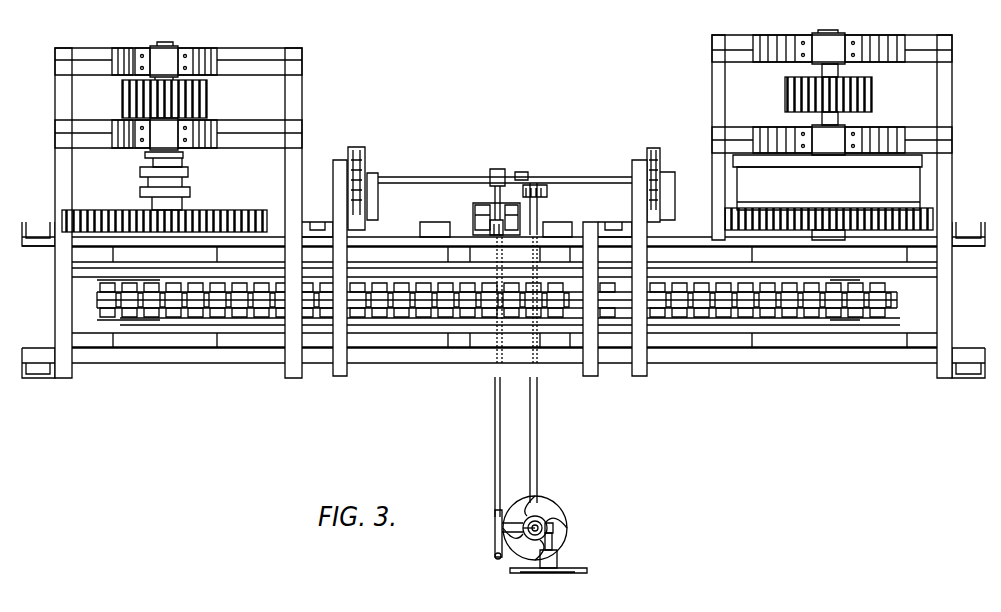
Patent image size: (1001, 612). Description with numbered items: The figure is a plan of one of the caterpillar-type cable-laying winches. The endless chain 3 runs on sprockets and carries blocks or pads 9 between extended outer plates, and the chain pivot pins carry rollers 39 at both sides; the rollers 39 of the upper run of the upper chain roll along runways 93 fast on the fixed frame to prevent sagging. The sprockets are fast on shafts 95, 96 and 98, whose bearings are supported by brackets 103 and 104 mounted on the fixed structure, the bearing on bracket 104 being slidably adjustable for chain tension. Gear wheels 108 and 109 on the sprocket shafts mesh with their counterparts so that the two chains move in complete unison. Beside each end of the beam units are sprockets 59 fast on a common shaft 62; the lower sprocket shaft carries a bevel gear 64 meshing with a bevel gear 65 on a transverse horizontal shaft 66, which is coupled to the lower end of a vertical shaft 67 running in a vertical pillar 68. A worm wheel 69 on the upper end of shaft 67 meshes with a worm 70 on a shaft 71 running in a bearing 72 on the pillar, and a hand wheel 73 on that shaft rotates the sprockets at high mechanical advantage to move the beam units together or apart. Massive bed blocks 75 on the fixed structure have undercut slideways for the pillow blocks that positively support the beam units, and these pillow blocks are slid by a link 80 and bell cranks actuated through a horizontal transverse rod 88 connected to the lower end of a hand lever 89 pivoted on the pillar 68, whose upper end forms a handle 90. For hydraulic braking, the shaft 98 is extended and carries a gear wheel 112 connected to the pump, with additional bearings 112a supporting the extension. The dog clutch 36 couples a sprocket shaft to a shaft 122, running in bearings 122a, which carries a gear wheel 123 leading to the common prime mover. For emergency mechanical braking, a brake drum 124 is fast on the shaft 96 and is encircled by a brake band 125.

The endless chain 3 is at (412, 318).
The blocks or pads 9 is at (100, 300).
The clutch 36 is at (188, 181).
The rollers 39 is at (310, 283).
The sprockets 59 is at (362, 168).
The common shaft 62 is at (448, 178).
The bevel gear 64 is at (525, 174).
The bevel gear 65 is at (545, 191).
The transverse horizontal shaft 66 is at (538, 418).
The vertical shaft 67 is at (530, 522).
The vertical pillar 68 is at (545, 512).
The worm wheel 69 is at (525, 540).
The worm 70 is at (555, 525).
The shaft 71 is at (553, 542).
The bearing 72 is at (557, 559).
The hand wheel 73 is at (560, 573).
The bed blocks 75 is at (432, 226).
The link 80 is at (495, 196).
The horizontal transverse rod 88 is at (494, 430).
The hand lever 89 is at (495, 544).
The handle 90 is at (495, 559).
The runways 93 is at (405, 283).
The shaft 95 is at (160, 280).
The shaft 96 is at (832, 320).
The shaft 98 is at (840, 72).
The bracket 103 is at (120, 260).
The bracket 104 is at (872, 255).
The gear wheel 108 is at (128, 220).
The gear wheel 109 is at (795, 218).
The gear wheel 112 is at (788, 92).
The additional bearings 112a is at (818, 38).
The shaft 122 is at (173, 44).
The bearings 122a is at (155, 48).
The gear wheel 123 is at (183, 98).
The brake drum 124 is at (865, 158).
The brake band 125 is at (748, 195).